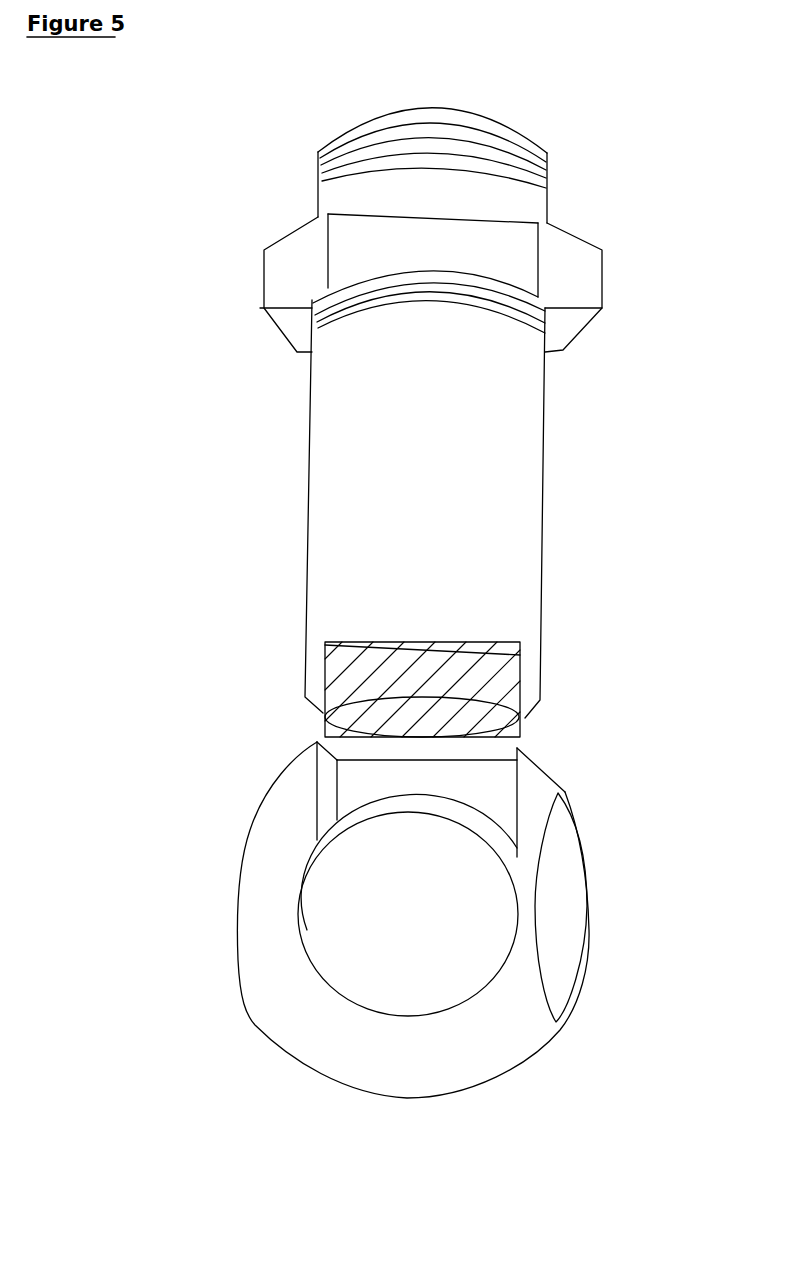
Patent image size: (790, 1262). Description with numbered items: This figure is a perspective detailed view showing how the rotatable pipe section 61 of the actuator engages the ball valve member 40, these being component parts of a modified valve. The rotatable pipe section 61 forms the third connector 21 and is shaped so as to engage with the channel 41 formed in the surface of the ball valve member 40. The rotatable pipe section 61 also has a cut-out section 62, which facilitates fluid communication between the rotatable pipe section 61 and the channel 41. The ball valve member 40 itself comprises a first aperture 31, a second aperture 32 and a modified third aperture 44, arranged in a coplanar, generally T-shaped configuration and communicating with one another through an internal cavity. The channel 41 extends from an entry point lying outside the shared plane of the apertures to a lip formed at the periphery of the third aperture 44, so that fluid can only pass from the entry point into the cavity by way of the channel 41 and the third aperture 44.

The third connector 21 is at (535, 188).
The rotatable pipe section 61 is at (515, 612).
The cut-out section 62 is at (432, 683).
The ball valve member 40 is at (275, 810).
The channel 41 is at (468, 788).
The second aperture 32 is at (237, 918).
The first aperture 31 is at (572, 905).
The third aperture 44 is at (455, 980).